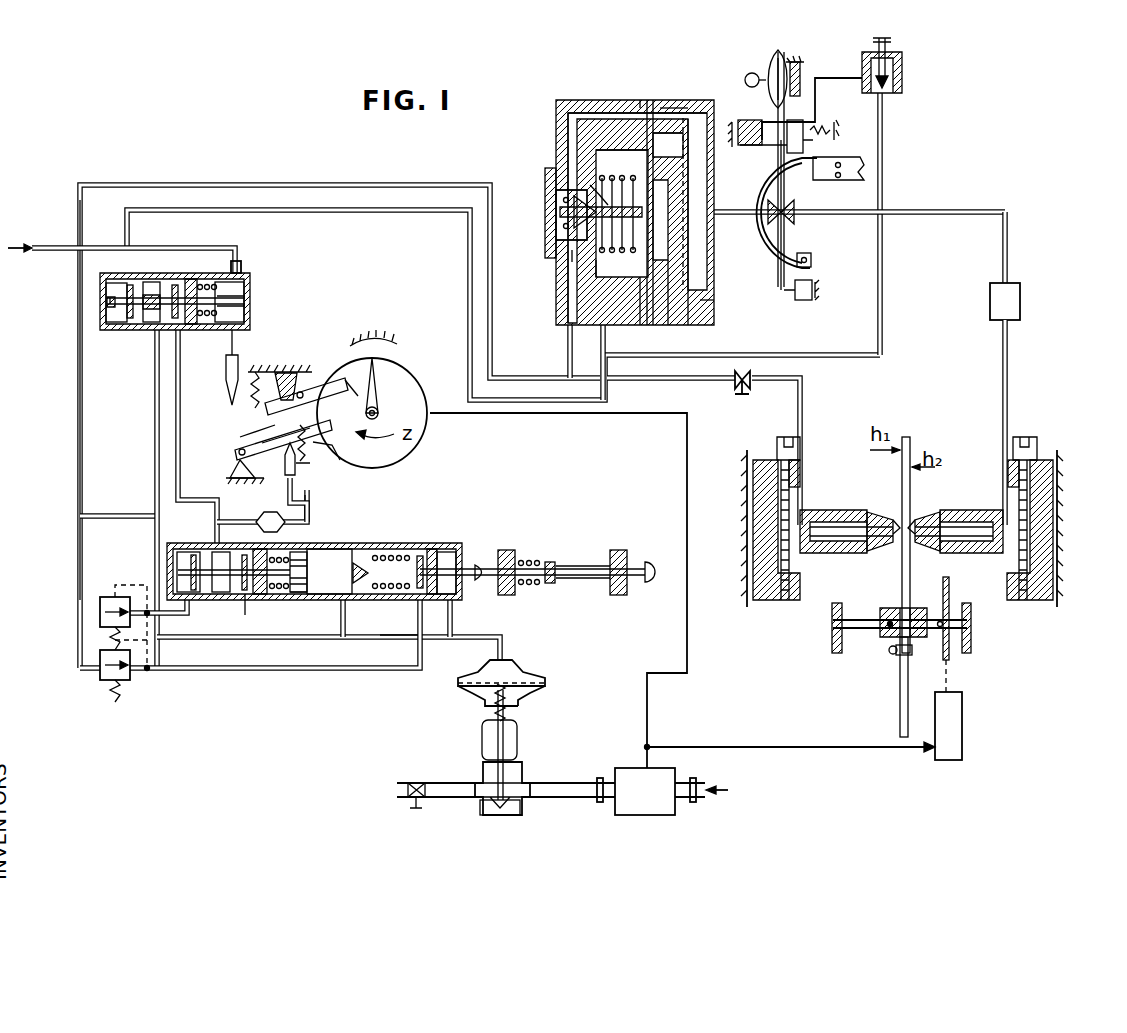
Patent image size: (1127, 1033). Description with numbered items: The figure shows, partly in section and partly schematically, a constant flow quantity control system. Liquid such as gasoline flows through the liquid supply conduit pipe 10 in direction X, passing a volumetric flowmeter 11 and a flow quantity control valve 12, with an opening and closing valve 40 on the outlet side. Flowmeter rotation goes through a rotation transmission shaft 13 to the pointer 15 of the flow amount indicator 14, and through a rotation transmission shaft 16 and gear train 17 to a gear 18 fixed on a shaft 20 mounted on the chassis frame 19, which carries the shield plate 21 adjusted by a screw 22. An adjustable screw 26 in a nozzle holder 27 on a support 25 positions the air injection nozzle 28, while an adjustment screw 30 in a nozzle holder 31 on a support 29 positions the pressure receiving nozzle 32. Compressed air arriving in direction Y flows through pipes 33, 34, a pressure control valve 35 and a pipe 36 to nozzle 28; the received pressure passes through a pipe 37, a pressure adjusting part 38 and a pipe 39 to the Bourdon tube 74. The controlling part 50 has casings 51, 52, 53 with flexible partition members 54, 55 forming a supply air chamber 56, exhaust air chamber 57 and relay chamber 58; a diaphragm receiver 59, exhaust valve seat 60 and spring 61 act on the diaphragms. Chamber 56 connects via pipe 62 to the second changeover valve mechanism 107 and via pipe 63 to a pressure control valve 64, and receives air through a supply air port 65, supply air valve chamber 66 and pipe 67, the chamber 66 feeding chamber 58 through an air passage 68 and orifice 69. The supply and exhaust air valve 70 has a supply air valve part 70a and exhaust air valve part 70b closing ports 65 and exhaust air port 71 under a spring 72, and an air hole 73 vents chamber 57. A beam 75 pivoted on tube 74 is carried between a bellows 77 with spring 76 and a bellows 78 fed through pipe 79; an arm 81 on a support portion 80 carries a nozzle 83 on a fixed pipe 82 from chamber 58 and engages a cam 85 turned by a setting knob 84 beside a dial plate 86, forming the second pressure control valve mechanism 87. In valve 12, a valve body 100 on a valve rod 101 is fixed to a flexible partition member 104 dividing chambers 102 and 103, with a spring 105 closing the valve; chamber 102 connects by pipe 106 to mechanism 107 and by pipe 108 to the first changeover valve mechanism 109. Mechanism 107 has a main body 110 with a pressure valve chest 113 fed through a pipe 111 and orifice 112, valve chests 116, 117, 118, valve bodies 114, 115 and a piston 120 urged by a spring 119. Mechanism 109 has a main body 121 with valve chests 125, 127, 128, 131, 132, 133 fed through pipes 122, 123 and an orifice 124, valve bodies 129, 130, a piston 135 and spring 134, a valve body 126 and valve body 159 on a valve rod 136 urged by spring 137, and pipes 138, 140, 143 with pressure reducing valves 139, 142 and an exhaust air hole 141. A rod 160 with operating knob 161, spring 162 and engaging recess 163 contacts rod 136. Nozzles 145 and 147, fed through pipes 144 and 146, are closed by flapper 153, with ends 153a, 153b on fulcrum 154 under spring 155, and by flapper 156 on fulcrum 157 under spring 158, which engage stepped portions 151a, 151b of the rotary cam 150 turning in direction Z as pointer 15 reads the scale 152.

The liquid supply conduit pipe 10 is at (430, 785).
The flowmeter 11 is at (625, 768).
The flow quantity control valve 12 is at (532, 772).
The rotation transmission shaft 13 is at (688, 550).
The flow amount indicator 14 is at (422, 400).
The pointer 15 is at (368, 400).
The rotation transmission shaft 16 is at (835, 749).
The gear train 17 is at (963, 708).
The gear 18 is at (950, 604).
The chassis frame 19 is at (747, 526).
The shaft 20 is at (868, 608).
The shield plate 21 is at (898, 680).
The screw 22 is at (896, 652).
The support 25 is at (755, 484).
The adjustable screw 26 is at (790, 440).
The nozzle holder 27 is at (828, 512).
The air injection nozzle 28 is at (872, 512).
The support 29 is at (1055, 480).
The adjustment screw 30 is at (1026, 440).
The nozzle holder 31 is at (970, 512).
The pressure receiving nozzle 32 is at (924, 514).
The pipe 33 is at (168, 188).
The pipe 34 is at (660, 381).
The pressure control valve 35 is at (738, 389).
The pipe 36 is at (802, 382).
The pipe 37 is at (1007, 348).
The pressure adjusting part 38 is at (1020, 302).
The pipe 39 is at (1007, 252).
The opening and closing valve 40 is at (414, 800).
The controlling part 50 is at (553, 100).
The casing 51 is at (582, 112).
The casing 52 is at (668, 133).
The casing 53 is at (714, 320).
The flexible partition member 54 is at (648, 100).
The flexible partition member 55 is at (684, 118).
The supply air chamber 56 is at (608, 150).
The exhaust air chamber 57 is at (683, 118).
The relay chamber 58 is at (748, 146).
The diaphragm receiver 59 is at (690, 318).
The exhaust valve seat 60 is at (640, 310).
The spring 61 is at (602, 336).
The pipe 62 is at (226, 208).
The pipe 63 is at (883, 320).
The pressure control valve 64 is at (903, 82).
The supply air port 65 is at (572, 250).
The supply air valve chamber 66 is at (555, 246).
The pipe 67 is at (568, 344).
The air passage 68 is at (572, 112).
The orifice 69 is at (700, 118).
The supply and exhaust air valve 70 is at (555, 215).
The supply air valve part 70a is at (590, 185).
The exhaust air valve part 70b is at (616, 195).
The exhaust air port 71 is at (596, 275).
The spring 72 is at (553, 192).
The air hole 73 is at (668, 318).
The Bourdon tube 74 is at (779, 288).
The beam 75 is at (795, 240).
The spring 76 is at (822, 150).
The bellows 77 is at (805, 125).
The bellows 78 is at (756, 185).
The pipe 79 is at (830, 77).
The support portion 80 is at (814, 296).
The arm 81 is at (807, 275).
The fixed pipe 82 is at (748, 215).
The nozzle 83 is at (770, 255).
The setting knob 84 is at (754, 73).
The cam 85 is at (798, 68).
The dial plate 86 is at (778, 52).
The second pressure control valve mechanism 87 is at (650, 54).
The valve body 100 is at (498, 806).
The valve rod 101 is at (485, 745).
The chamber 102 is at (522, 675).
The chamber 103 is at (532, 688).
The flexible partition member 104 is at (472, 688).
The spring 105 is at (492, 705).
The pipe 106 is at (155, 402).
The second changeover valve mechanism 107 is at (196, 272).
The pipe 108 is at (452, 620).
The first changeover valve mechanism 109 is at (410, 636).
The main body 110 is at (150, 330).
The pipe 111 is at (238, 256).
The orifice 112 is at (243, 264).
The pressure valve chest 113 is at (247, 300).
The valve body 114 is at (106, 286).
The valve body 115 is at (160, 283).
The valve chest 116 is at (110, 318).
The valve chest 117 is at (130, 283).
The valve chest 118 is at (172, 322).
The spring 119 is at (232, 330).
The piston 120 is at (245, 292).
The main body 121 is at (304, 592).
The pipe 122 is at (80, 420).
The pipe 123 is at (82, 514).
The orifice 124 is at (262, 518).
The valve chest 125 is at (343, 608).
The valve body 126 is at (430, 552).
The valve chest 127 is at (418, 556).
The valve chest 128 is at (455, 552).
The valve body 129 is at (192, 558).
The valve body 130 is at (244, 600).
The valve chest 131 is at (170, 536).
The valve chest 132 is at (204, 596).
The valve chest 133 is at (268, 592).
The spring 134 is at (300, 600).
The piston 135 is at (307, 565).
The valve rod 136 is at (472, 580).
The spring 137 is at (395, 556).
The pipe 138 is at (175, 475).
The bleeder type pressure reducing valve 139 is at (100, 598).
The pipe 140 is at (160, 625).
The exhaust air hole 141 is at (258, 638).
The bleeder type pressure reducing valve 142 is at (100, 650).
The pipe 143 is at (290, 668).
The pipe 144 is at (232, 366).
The nozzle 145 is at (235, 404).
The pipe 146 is at (310, 516).
The nozzle 147 is at (300, 498).
The rotary cam 150 is at (405, 380).
The first stepped portion 151a is at (350, 388).
The second stepped portion 151b is at (345, 455).
The scale 152 is at (386, 338).
The flapper 153 is at (240, 446).
The flapper end 153a is at (235, 435).
The flapper end 153b is at (318, 388).
The fulcrum 154 is at (286, 372).
The spring 155 is at (256, 372).
The flapper 156 is at (236, 462).
The fulcrum 157 is at (238, 478).
The spring 158 is at (308, 458).
The valve body 159 is at (358, 585).
The rod 160 is at (555, 578).
The operating knob 161 is at (645, 562).
The spring 162 is at (520, 552).
The engaging recess 163 is at (598, 572).